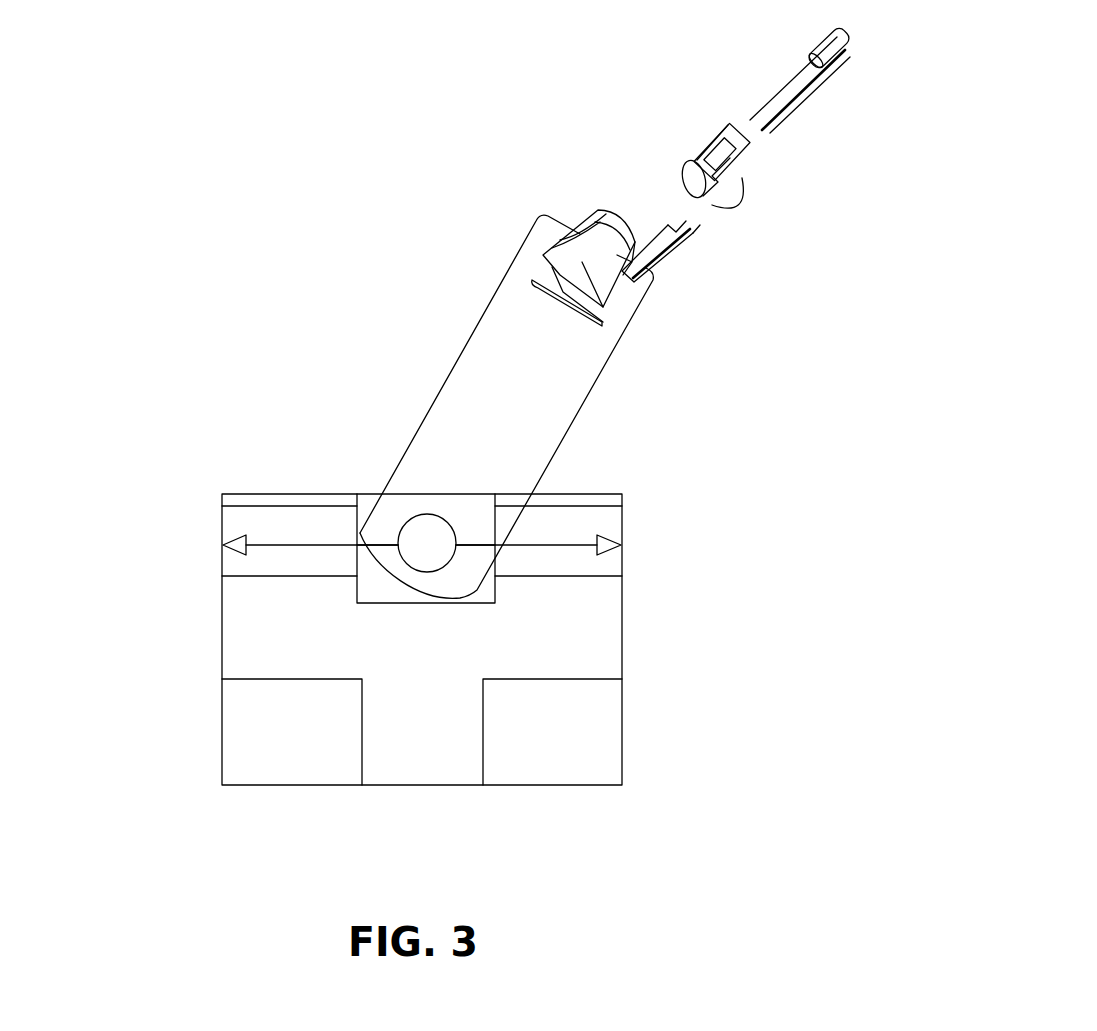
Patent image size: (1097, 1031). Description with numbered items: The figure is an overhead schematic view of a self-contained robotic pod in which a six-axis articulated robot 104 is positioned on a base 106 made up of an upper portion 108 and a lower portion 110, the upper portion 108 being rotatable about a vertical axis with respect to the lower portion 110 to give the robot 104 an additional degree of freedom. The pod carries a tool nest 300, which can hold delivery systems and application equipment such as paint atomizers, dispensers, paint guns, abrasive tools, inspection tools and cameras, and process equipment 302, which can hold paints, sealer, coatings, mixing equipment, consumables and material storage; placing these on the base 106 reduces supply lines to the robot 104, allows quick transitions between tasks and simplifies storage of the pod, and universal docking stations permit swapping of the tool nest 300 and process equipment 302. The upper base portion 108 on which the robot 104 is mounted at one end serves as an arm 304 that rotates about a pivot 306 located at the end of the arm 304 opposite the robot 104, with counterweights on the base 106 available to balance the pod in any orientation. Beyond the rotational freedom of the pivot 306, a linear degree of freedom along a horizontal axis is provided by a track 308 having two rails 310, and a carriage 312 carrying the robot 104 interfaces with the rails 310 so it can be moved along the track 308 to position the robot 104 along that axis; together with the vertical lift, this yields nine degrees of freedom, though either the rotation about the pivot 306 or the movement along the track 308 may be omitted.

The robot 104 is at (717, 220).
The base 106 is at (240, 657).
The upper portion 108 is at (487, 373).
The lower portion 110 is at (238, 608).
The tool nest 300 is at (547, 770).
The process equipment 302 is at (283, 770).
The arm 304 is at (562, 358).
The pivot 306 is at (427, 543).
The track 308 is at (298, 577).
The rails 310 is at (240, 518).
The carriage 312 is at (380, 603).